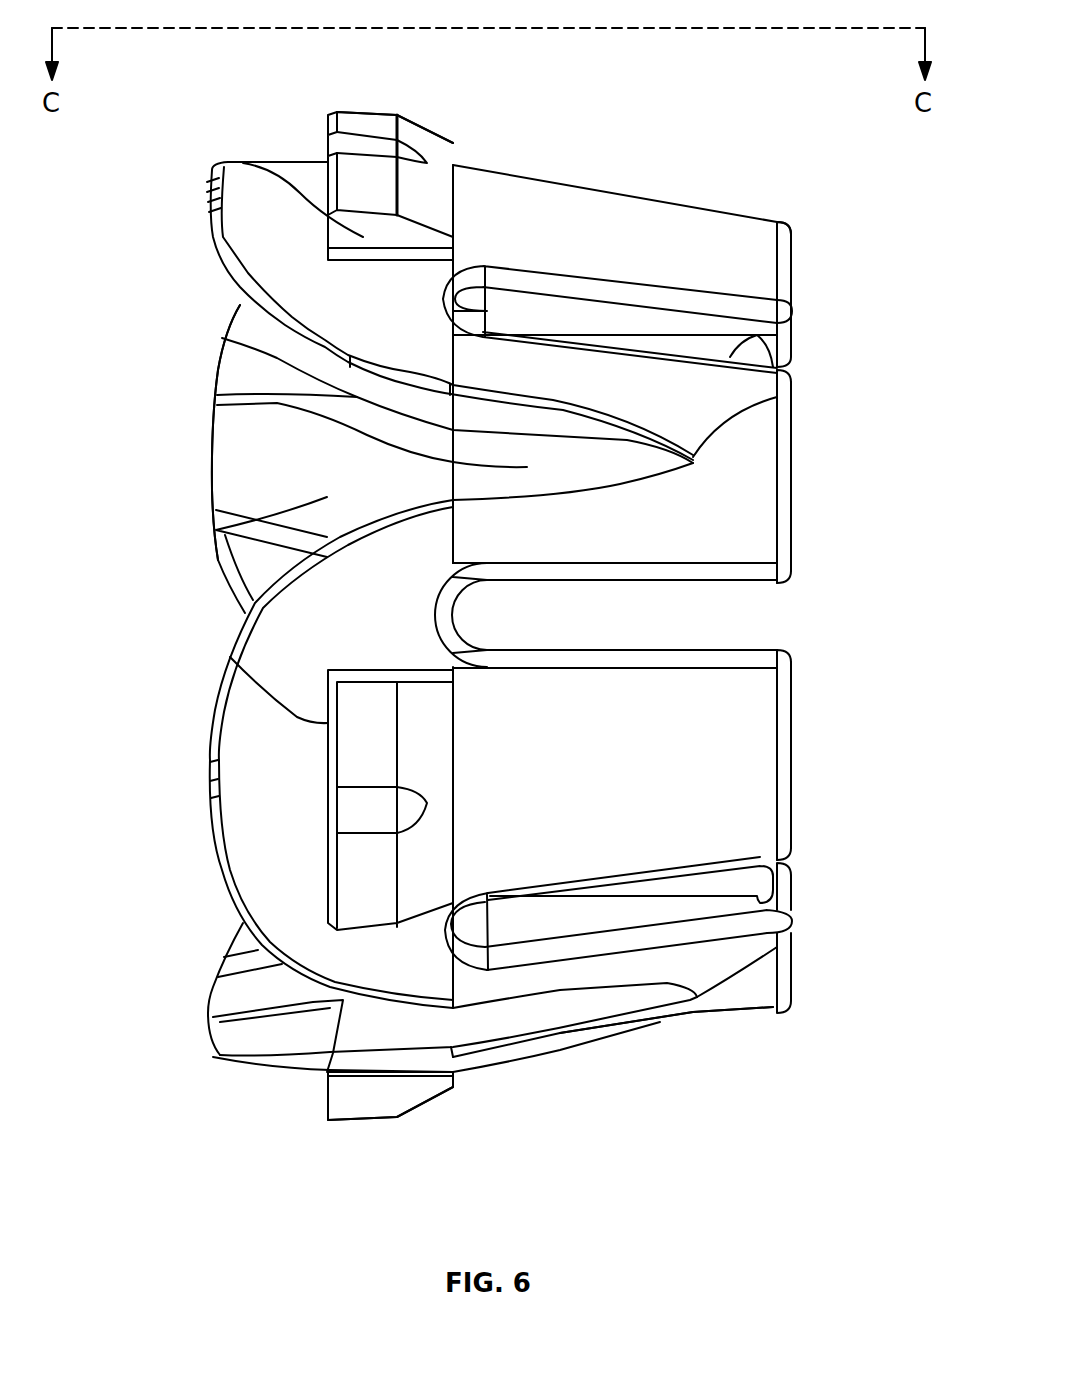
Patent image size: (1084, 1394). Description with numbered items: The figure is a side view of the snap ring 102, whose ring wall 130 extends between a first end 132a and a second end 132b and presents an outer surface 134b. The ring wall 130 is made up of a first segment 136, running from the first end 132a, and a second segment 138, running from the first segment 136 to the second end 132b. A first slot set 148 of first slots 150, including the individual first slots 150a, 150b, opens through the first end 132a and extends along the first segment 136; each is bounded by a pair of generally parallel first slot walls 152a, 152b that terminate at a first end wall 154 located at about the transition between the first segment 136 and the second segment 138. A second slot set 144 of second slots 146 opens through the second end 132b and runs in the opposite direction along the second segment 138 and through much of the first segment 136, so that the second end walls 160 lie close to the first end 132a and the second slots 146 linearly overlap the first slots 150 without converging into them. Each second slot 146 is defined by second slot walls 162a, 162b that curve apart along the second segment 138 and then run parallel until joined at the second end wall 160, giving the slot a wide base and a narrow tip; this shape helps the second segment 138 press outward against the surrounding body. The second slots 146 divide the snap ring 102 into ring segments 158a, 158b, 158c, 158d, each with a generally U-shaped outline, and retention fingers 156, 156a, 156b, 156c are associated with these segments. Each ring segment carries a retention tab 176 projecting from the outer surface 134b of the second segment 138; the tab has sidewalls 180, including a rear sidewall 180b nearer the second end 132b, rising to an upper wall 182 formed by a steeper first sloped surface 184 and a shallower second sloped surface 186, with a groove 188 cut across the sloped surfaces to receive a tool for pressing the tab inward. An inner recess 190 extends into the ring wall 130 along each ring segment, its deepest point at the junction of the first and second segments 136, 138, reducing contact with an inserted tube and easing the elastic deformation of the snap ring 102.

The snap ring 102 is at (725, 1095).
The ring wall 130 is at (257, 192).
The first end 132a is at (792, 789).
The second end 132b is at (210, 736).
The outer surface 134b is at (662, 240).
The first segment 136 is at (545, 207).
The second segment 138 is at (293, 183).
The second slot set 144 is at (143, 590).
The second slot 146 is at (217, 400).
The first slot set 148 is at (917, 477).
The first slot 150 is at (777, 335).
The first slot 150a is at (757, 618).
The first slot 150b is at (760, 897).
The first slot wall 152a is at (635, 580).
The first slot wall 152b is at (617, 653).
The first end wall 154 is at (485, 288).
The retention fingers 156 is at (223, 310).
The retention finger 156a is at (742, 795).
The retention finger 156b is at (750, 545).
The retention finger 156c is at (748, 252).
The ring segment 158a is at (240, 180).
The ring segment 158b is at (230, 437).
The ring segment 158c is at (227, 1035).
The ring segment 158d is at (245, 775).
The second end wall 160 is at (730, 412).
The second slot wall 162a is at (548, 425).
The second slot wall 162b is at (700, 483).
The retention tab 176 is at (263, 167).
The sidewalls 180 is at (328, 723).
The rear sidewall 180b is at (279, 690).
The upper wall 182 is at (437, 150).
The first sloped surface 184 is at (390, 1096).
The second sloped surface 186 is at (373, 120).
The groove 188 is at (362, 143).
The inner recess 190 is at (243, 547).